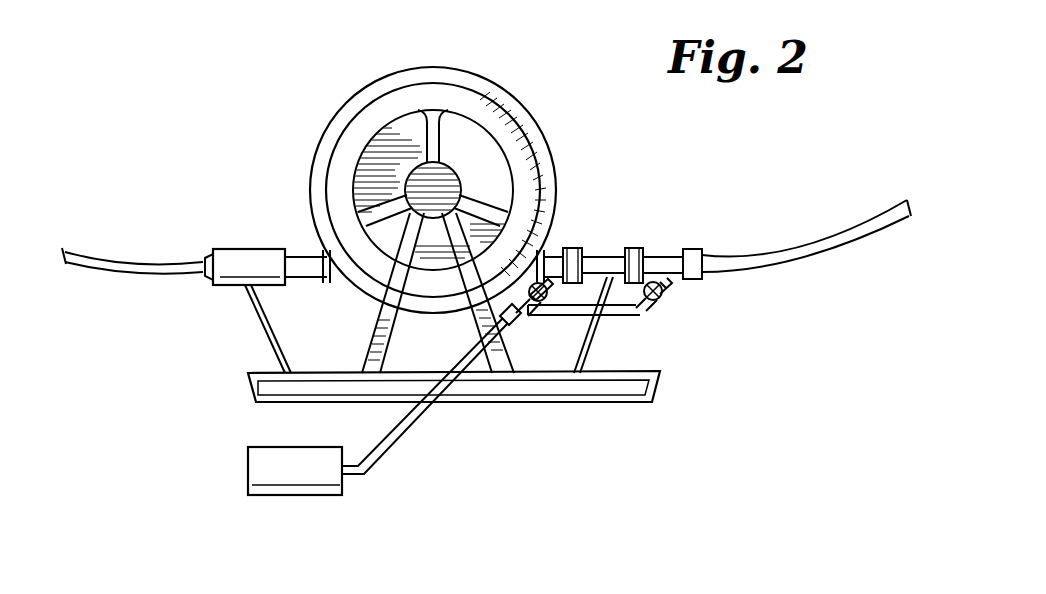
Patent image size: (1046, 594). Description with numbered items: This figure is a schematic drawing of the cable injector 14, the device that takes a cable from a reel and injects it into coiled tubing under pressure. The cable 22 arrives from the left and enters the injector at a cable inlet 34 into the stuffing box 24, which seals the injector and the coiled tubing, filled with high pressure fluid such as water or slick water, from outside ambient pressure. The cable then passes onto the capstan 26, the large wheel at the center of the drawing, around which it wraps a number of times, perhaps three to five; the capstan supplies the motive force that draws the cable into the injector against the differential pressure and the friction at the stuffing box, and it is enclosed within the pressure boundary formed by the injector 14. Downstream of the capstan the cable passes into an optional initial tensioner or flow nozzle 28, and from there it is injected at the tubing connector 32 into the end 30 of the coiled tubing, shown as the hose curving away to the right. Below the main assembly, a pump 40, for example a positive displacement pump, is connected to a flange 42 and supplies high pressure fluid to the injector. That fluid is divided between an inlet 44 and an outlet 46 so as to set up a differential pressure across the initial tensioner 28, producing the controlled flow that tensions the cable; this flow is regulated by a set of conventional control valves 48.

The cable injector 14 is at (358, 92).
The capstan 26 is at (528, 130).
The cable 22 is at (104, 270).
The cable inlet 34 is at (206, 275).
The stuffing box 24 is at (245, 255).
The initial tensioner or flow nozzle 28 is at (607, 255).
The tubing connector 32 is at (703, 280).
The end of the coiled tubing 30 is at (888, 225).
The inlet 44 is at (552, 255).
The outlet 46 is at (680, 278).
The control valves 48 is at (557, 313).
The flange 42 is at (530, 320).
The pump 40 is at (350, 490).